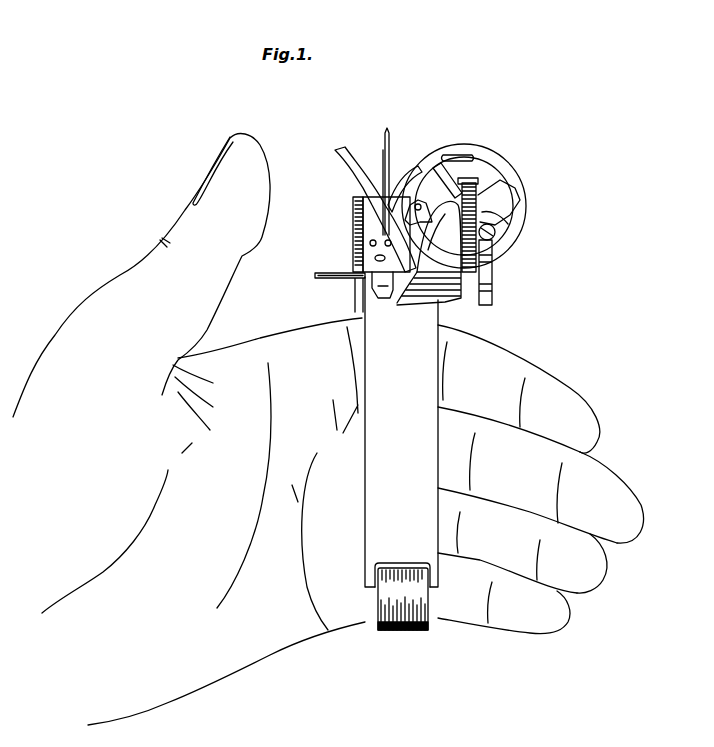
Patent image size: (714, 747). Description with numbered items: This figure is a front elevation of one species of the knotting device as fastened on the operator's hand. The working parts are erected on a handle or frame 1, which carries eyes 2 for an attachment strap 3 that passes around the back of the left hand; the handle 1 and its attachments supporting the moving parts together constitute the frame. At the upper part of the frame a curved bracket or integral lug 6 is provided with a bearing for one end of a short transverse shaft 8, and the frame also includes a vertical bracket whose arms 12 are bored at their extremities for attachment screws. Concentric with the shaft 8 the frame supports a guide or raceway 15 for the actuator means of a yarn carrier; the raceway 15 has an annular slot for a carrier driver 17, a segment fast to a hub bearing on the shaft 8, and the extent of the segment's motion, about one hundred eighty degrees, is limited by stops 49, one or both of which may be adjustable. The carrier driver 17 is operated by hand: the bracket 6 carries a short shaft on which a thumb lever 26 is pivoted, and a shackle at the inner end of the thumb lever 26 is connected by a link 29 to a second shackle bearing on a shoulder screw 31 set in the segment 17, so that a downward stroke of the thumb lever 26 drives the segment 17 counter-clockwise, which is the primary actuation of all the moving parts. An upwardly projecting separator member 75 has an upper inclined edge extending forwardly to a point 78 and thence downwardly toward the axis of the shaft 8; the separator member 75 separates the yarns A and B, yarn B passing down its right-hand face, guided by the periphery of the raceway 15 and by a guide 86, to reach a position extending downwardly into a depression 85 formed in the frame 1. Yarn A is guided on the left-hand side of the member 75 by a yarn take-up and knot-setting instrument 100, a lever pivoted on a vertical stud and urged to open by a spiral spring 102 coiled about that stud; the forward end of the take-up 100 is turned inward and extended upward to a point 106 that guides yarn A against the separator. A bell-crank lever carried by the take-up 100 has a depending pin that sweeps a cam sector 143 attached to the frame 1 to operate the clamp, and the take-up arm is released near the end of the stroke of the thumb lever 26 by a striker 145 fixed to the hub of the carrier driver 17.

The handle or frame 1 is at (401, 432).
The eyes 2 is at (372, 576).
The attachment strap 3 is at (402, 632).
The curved bracket or integral lug 6 is at (447, 282).
The short transverse shaft 8 is at (429, 252).
The arms 12 is at (502, 190).
The guide or raceway 15 is at (530, 203).
The carrier driver 17 is at (510, 223).
The thumb lever 26 is at (478, 190).
The link 29 is at (492, 260).
The shoulder screw 31 is at (496, 233).
The stops 49 is at (446, 172).
The separator member 75 is at (382, 148).
The point 78 is at (388, 131).
The depression 85 is at (380, 293).
The guide 86 is at (407, 173).
The yarn take-up and knot-setting instrument 100 is at (375, 225).
The spiral spring 102 is at (358, 217).
The point 106 is at (334, 148).
The cam sector 143 is at (320, 272).
The striker 145 is at (440, 163).